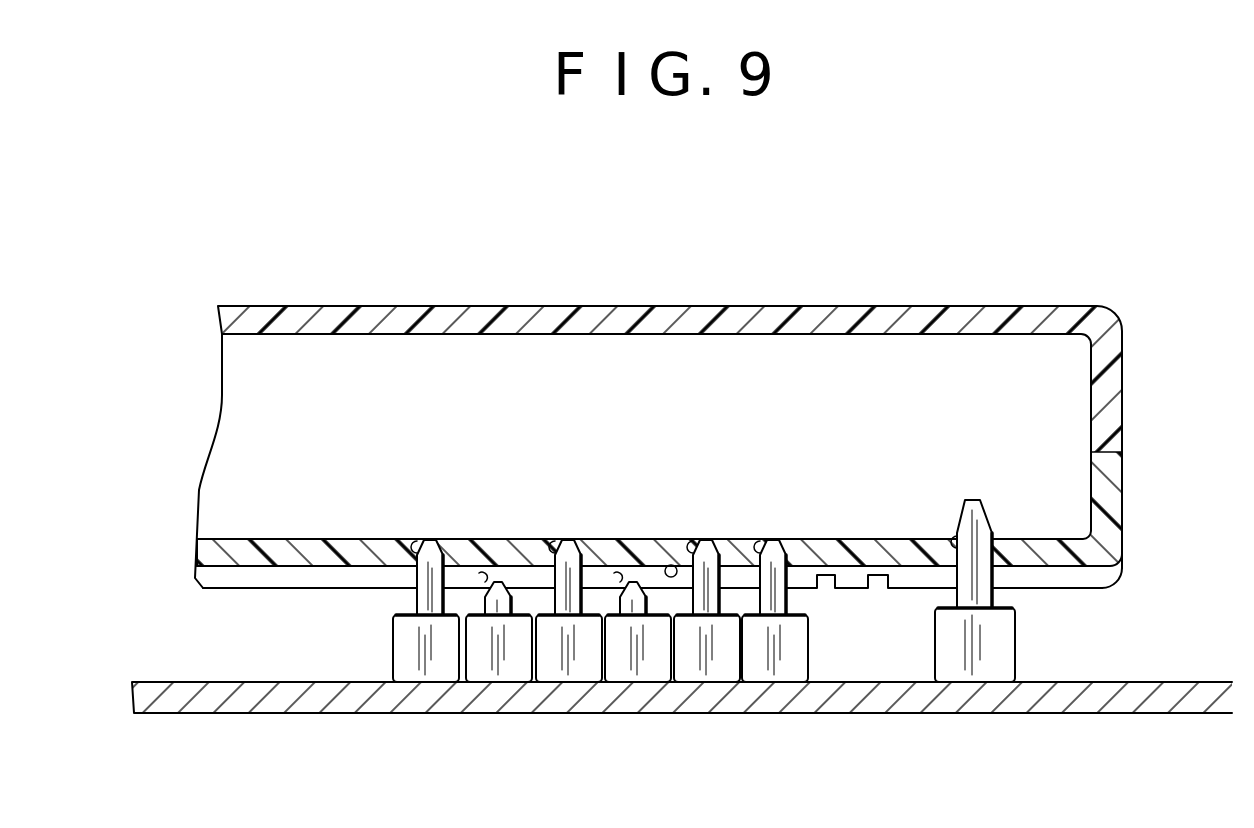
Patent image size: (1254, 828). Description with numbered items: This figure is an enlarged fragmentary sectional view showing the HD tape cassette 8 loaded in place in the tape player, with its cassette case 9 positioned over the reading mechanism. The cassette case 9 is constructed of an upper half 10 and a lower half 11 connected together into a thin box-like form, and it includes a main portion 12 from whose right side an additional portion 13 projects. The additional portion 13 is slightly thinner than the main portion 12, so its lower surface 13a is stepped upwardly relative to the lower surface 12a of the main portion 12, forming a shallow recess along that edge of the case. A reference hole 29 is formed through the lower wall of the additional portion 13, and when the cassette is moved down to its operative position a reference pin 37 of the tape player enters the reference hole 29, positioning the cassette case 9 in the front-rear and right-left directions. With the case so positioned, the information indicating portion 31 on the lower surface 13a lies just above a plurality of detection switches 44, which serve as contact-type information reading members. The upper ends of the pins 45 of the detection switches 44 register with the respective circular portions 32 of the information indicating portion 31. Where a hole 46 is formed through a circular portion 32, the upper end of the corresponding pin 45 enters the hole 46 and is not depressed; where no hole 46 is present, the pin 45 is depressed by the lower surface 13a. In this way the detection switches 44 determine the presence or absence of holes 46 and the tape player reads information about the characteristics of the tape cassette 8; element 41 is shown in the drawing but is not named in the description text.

The HD tape cassette 8 is at (997, 306).
The cassette case 9 is at (653, 305).
The upper half 10 is at (807, 313).
The lower half 11 is at (277, 560).
The main portion 12 is at (1102, 586).
The lower surface of the main portion 12a is at (1054, 588).
The additional portion 13 is at (216, 562).
The lower surface of the additional portion 13a is at (325, 568).
The reference hole 29 is at (957, 540).
The information indicating portion 31 is at (672, 564).
The circular portions 32 is at (482, 573).
The reference pin 37 is at (980, 500).
The circuit board 41 is at (160, 690).
The detection switches 44 is at (393, 640).
The pins 45 is at (429, 522).
The hole 46 is at (414, 543).